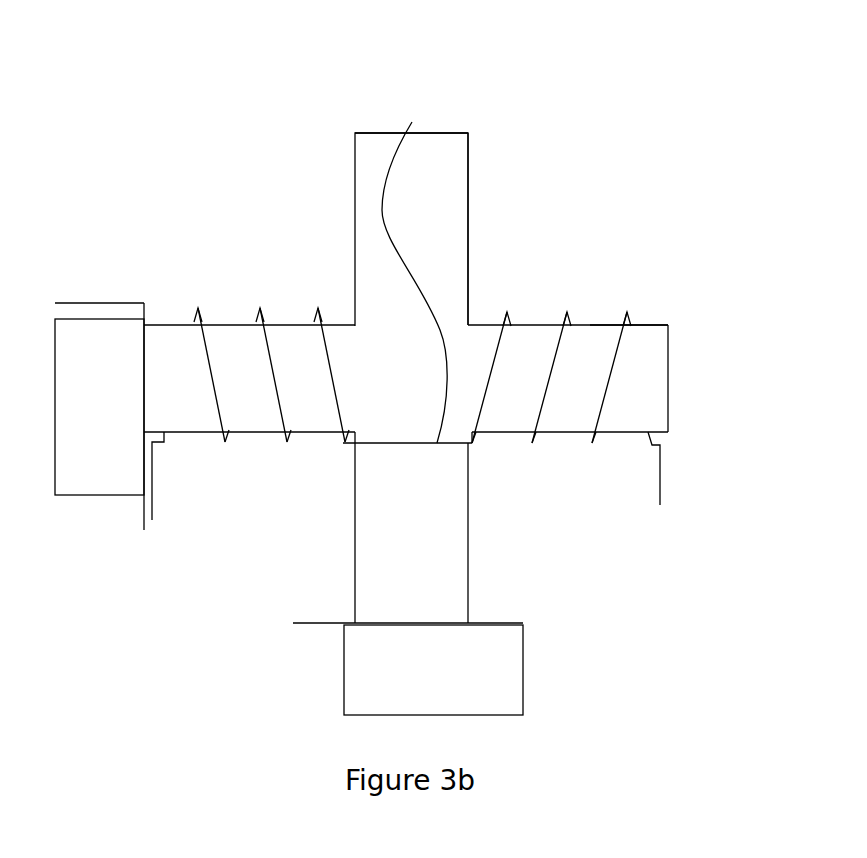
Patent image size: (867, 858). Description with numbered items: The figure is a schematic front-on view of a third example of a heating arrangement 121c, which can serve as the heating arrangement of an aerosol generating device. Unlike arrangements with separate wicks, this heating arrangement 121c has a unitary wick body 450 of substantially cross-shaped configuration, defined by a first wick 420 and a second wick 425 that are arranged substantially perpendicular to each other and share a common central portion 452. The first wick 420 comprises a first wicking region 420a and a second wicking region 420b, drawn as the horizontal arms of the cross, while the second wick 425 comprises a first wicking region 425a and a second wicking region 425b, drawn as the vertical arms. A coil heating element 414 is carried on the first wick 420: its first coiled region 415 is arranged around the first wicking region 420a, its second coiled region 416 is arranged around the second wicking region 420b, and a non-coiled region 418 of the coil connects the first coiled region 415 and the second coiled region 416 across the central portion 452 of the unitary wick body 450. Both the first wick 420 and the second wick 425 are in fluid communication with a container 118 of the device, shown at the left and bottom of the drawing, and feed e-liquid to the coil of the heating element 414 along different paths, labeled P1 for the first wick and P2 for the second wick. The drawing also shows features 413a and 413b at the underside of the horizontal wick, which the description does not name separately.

The container 118 is at (118, 386).
The heating arrangement 121c is at (626, 104).
The heating element 414 is at (433, 60).
The first coiled region 415 is at (262, 318).
The second coiled region 416 is at (590, 325).
The non-coiled region 418 is at (414, 266).
The first wick 420 is at (265, 433).
The first wicking region 420a is at (227, 303).
The second wicking region 420b is at (665, 325).
The second wick 425 is at (468, 263).
The first wicking region 425a is at (468, 585).
The second wicking region 425b is at (457, 158).
The unitary wick body 450 is at (612, 261).
The central portion 452 is at (402, 380).
The first step 413a is at (152, 487).
The second step 413b is at (660, 502).
The first path P1 is at (358, 382).
The second path P2 is at (412, 402).